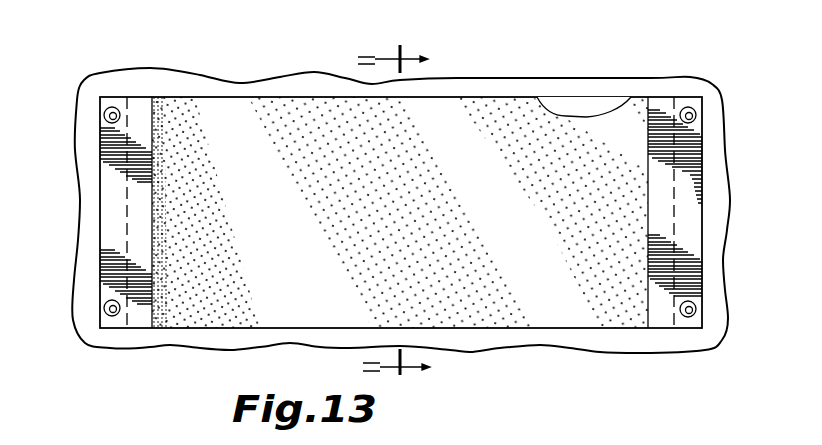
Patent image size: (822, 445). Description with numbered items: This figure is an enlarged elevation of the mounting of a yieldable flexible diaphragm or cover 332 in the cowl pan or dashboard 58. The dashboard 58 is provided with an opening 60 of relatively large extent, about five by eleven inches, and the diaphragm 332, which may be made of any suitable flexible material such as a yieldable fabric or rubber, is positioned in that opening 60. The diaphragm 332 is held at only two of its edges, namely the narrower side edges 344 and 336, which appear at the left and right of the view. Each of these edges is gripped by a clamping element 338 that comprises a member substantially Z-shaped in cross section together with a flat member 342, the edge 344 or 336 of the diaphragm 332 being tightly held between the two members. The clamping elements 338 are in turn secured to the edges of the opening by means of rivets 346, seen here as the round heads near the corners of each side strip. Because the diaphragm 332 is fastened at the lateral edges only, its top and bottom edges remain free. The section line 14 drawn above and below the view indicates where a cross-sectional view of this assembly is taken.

The section line 14- 14 is at (413, 202).
The cowl pan or dashboard 58 is at (716, 140).
The opening 60 is at (591, 97).
The yieldable flexible diaphragm or cover 332 is at (269, 100).
The side edge of diaphragm 336 is at (676, 226).
The clamping element 338 is at (104, 183).
The flat member 342 is at (140, 329).
The side edge of diaphragm 344 is at (127, 236).
The rivet 346 is at (104, 113).